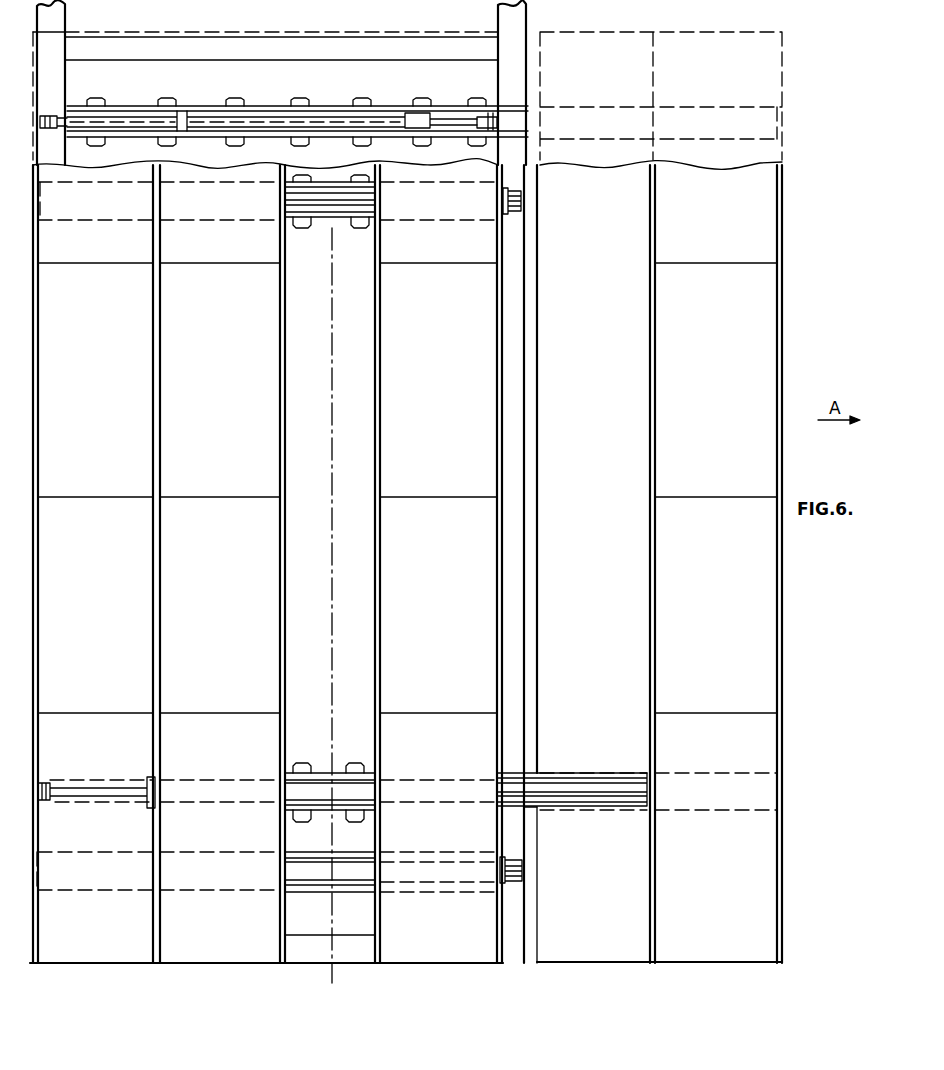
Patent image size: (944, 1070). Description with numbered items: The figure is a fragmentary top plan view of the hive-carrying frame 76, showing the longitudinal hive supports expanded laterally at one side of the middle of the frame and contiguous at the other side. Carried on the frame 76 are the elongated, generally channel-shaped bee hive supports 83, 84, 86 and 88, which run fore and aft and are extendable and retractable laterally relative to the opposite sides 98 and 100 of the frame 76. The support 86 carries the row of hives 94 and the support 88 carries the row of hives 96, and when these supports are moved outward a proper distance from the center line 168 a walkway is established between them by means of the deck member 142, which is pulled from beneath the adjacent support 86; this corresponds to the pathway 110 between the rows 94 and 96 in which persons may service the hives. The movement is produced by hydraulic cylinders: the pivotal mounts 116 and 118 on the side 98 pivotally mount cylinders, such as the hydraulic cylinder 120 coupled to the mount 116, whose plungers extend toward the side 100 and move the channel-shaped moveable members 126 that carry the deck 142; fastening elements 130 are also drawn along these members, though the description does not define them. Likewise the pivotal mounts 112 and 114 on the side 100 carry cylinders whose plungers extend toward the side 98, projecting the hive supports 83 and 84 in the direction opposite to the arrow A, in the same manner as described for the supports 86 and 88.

The side of the frame 98 is at (58, 20).
The pivotal mount 116 is at (50, 118).
The hydraulic cylinder 120 is at (93, 102).
The bolts 130 is at (405, 106).
The moveable member 126 is at (463, 86).
The pivotal mount 112 is at (523, 218).
The row of hives 96 is at (752, 258).
The bee hive support 86 is at (438, 594).
The center line 168 is at (332, 375).
The row of hives 94 is at (448, 422).
The side of the frame 100 is at (512, 445).
The bee hive support 83 is at (96, 466).
The bee hive support 84 is at (231, 444).
The frame 76 is at (514, 569).
The deck member 142 is at (612, 639).
The bee hive support 88 is at (776, 672).
The pivotal mount 118 is at (48, 782).
The pivotal mount 114 is at (517, 885).
The pathway 110 is at (565, 930).